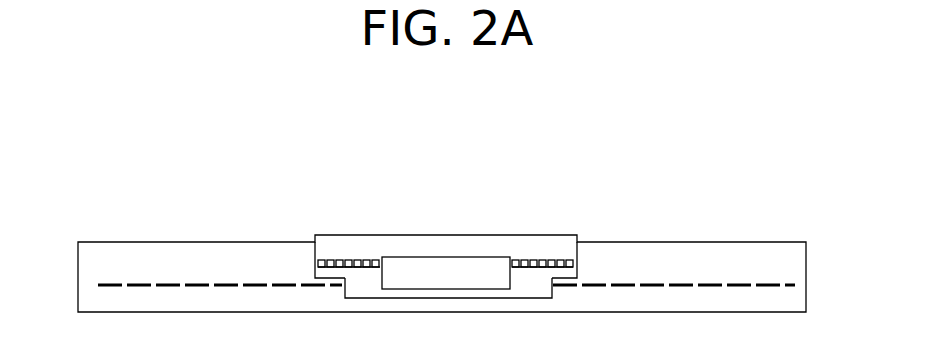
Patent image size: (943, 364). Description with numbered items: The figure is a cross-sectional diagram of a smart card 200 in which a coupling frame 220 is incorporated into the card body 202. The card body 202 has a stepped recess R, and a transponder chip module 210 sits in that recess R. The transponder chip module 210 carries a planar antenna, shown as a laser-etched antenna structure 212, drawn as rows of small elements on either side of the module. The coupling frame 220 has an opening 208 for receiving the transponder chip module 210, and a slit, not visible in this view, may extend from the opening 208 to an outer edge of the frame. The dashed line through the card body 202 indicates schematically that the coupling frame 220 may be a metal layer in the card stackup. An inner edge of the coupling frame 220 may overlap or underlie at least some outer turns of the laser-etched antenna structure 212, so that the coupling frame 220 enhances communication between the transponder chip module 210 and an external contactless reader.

The smart card 200 is at (131, 194).
The card body 202 is at (679, 234).
The opening 208 is at (536, 288).
The transponder chip module 210 is at (453, 224).
The laser-etched antenna structure 212 is at (338, 248).
The coupling frame 220 is at (267, 268).
The stepped recess R is at (332, 300).